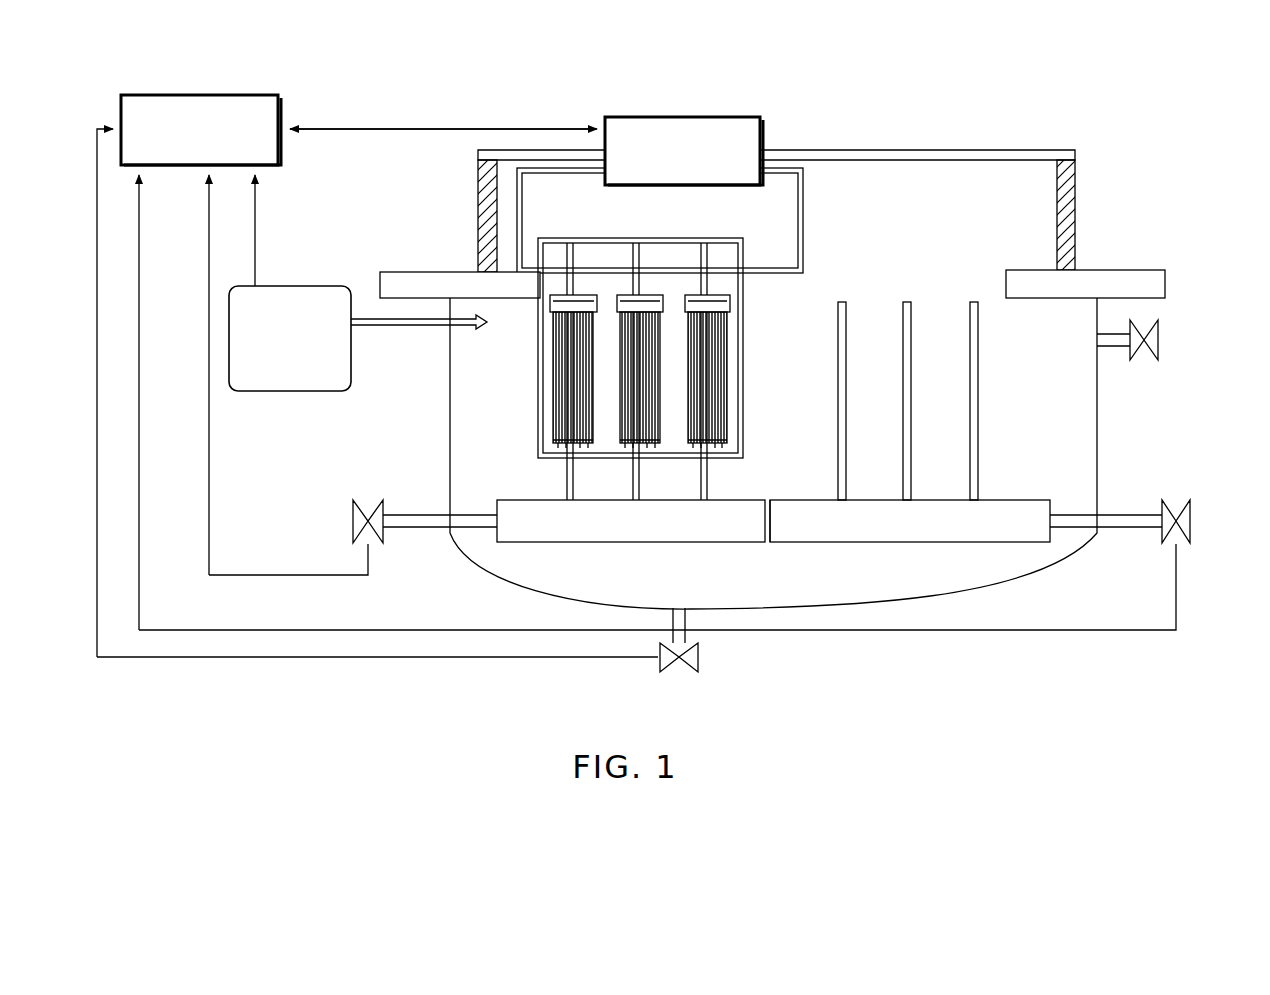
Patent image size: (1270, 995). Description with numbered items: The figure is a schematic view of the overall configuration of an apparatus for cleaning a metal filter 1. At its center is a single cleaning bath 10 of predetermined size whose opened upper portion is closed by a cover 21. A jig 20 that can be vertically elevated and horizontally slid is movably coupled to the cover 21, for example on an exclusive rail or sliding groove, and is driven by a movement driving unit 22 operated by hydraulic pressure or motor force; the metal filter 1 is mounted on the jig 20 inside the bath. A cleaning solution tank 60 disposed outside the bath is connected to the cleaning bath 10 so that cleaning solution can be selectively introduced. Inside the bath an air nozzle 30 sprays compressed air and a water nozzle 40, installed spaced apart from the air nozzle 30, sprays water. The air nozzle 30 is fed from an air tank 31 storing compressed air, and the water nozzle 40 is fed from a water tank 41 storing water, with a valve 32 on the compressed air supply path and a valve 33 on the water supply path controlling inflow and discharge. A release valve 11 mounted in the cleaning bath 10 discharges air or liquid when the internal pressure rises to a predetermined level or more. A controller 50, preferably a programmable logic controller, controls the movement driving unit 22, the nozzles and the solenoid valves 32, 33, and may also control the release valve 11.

The metal filter 1 is at (735, 332).
The cleaning bath 10 is at (1097, 418).
The release valve 11 is at (1157, 331).
The jig 20 is at (743, 375).
The cover 21 is at (1117, 282).
The movement driving unit 22 is at (742, 117).
The air nozzle 30 is at (567, 480).
The air tank 31 is at (523, 522).
The valve 32 is at (371, 500).
The valve 33 is at (1190, 510).
The water nozzle 40 is at (978, 437).
The water tank 41 is at (1013, 528).
The controller 50 is at (258, 95).
The cleaning solution tank 60 is at (327, 286).